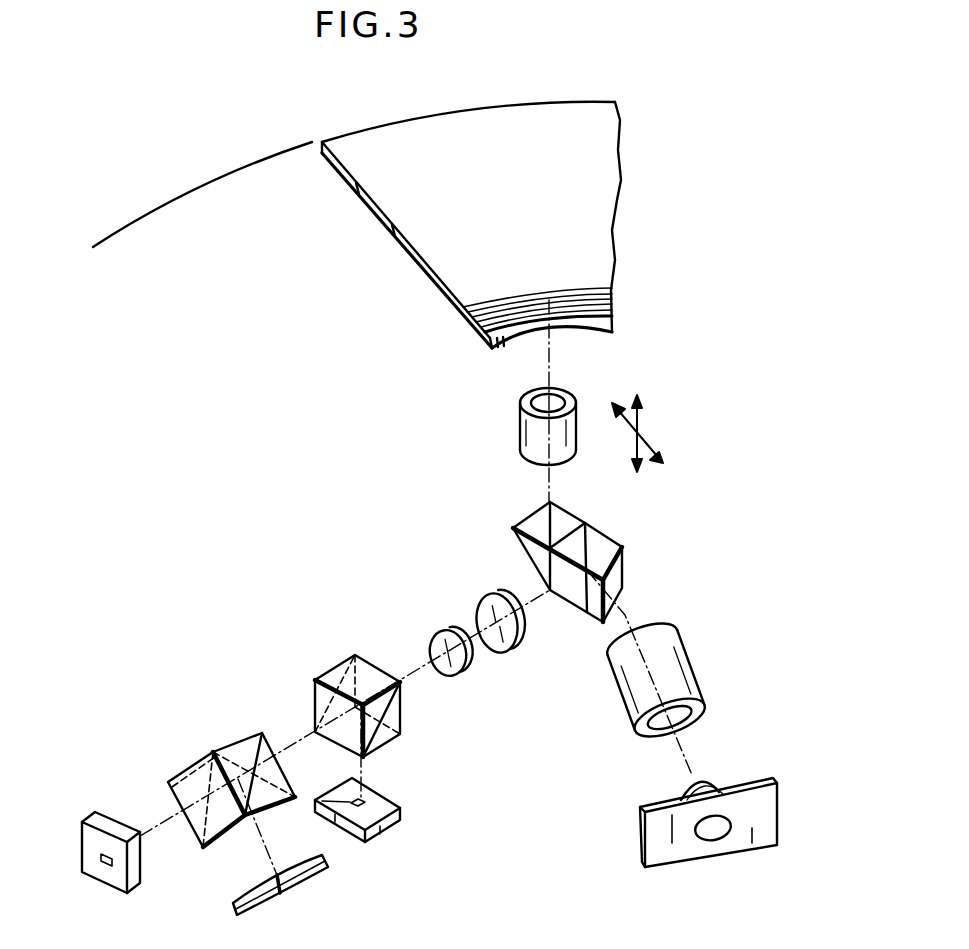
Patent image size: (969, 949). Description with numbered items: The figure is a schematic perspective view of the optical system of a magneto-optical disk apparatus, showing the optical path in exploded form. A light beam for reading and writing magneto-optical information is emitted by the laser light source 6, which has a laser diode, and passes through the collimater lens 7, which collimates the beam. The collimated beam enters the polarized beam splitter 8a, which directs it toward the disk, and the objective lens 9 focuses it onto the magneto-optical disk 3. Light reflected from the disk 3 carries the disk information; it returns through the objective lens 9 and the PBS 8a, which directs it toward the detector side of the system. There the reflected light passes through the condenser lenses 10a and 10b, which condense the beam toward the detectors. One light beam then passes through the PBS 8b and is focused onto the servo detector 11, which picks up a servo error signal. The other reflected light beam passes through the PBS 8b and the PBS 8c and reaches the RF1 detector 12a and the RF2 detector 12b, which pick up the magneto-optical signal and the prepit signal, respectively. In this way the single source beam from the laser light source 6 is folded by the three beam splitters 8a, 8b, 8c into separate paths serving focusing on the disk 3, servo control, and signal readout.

The magneto-optical disk 3 is at (603, 232).
The objective lens 9 is at (537, 442).
The polarized beam splitter 8a is at (620, 577).
The collimater lens 7 is at (675, 687).
The laser light source 6 is at (765, 812).
The condenser lens 10a is at (487, 592).
The condenser lens 10b is at (437, 641).
The polarized beam splitter 8b is at (332, 668).
The polarized beam splitter 8c is at (227, 745).
The servo detector 11 is at (392, 800).
The RF1 detector 12a is at (285, 893).
The RF2 detector 12b is at (107, 867).